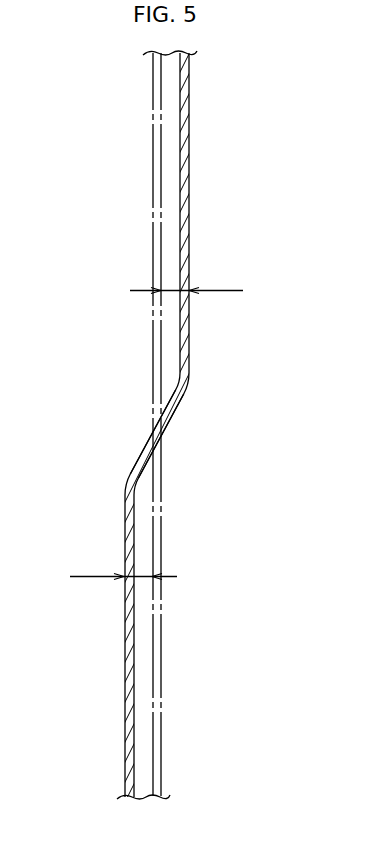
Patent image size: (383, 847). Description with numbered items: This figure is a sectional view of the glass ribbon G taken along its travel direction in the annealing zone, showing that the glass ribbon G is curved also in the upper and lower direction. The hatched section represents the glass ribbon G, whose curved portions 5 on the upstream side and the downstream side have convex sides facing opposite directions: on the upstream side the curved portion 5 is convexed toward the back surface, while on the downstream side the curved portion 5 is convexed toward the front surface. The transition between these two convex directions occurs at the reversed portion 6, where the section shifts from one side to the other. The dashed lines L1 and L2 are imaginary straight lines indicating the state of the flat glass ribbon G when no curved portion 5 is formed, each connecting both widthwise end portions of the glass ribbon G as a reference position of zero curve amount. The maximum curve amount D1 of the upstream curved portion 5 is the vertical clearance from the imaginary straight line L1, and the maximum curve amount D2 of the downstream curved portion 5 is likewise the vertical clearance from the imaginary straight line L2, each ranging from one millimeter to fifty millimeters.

The glass ribbon G is at (170, 439).
The curved portion 5 is at (190, 197).
The reversed portion 6 is at (168, 417).
The imaginary straight line L1 is at (160, 186).
The imaginary straight line L2 is at (152, 247).
The maximum curve amount D1 is at (186, 279).
The maximum curve amount D2 is at (123, 567).